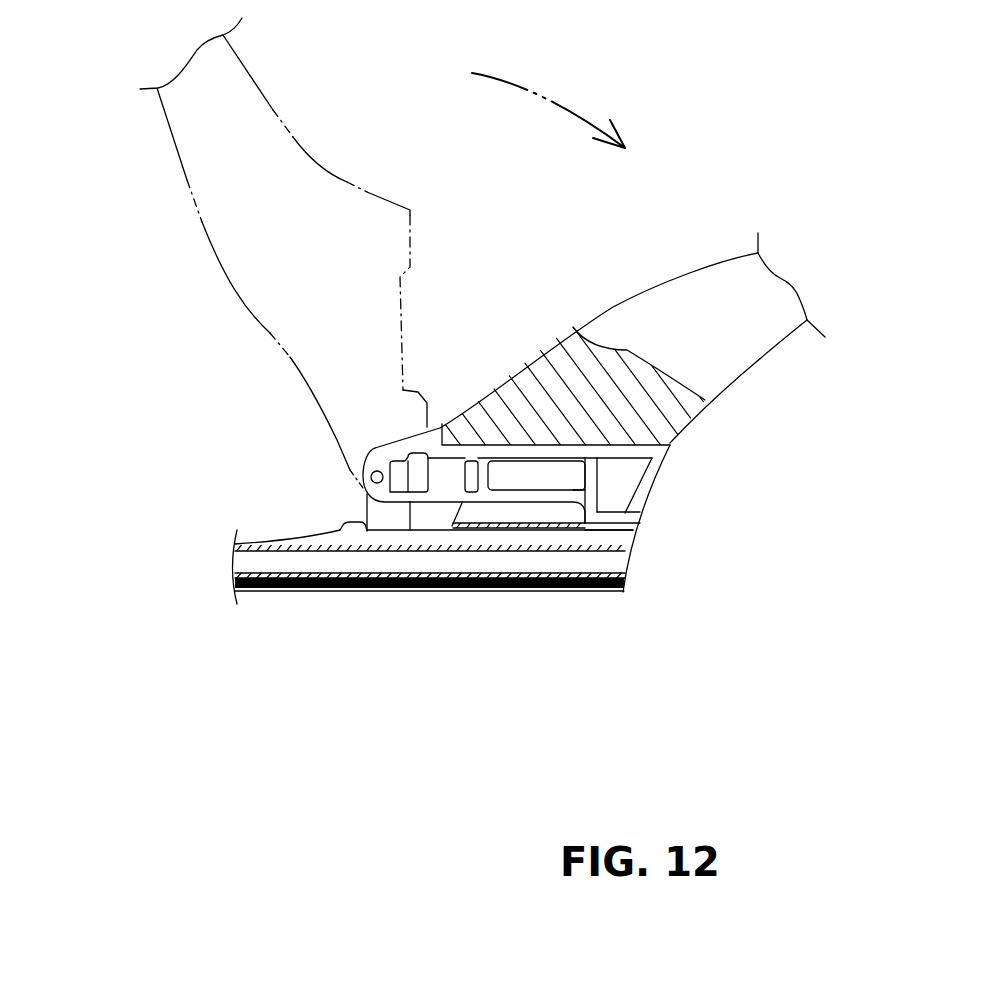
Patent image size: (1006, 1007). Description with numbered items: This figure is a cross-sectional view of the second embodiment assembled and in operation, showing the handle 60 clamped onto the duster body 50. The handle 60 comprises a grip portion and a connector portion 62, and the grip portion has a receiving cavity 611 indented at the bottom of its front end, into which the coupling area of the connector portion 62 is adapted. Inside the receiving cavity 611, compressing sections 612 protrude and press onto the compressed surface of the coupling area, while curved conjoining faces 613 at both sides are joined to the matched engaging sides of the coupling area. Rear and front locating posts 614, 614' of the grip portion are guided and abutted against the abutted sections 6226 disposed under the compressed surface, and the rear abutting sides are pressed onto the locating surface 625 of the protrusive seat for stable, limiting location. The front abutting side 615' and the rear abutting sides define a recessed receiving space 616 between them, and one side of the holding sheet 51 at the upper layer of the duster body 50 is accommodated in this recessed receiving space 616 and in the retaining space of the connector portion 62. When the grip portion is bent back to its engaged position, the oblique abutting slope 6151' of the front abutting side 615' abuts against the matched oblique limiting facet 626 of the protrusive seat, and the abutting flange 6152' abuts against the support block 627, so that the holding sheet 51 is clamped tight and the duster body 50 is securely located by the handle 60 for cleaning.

The duster body 50 is at (207, 547).
The holding sheet 51 is at (273, 543).
The handle 60 is at (913, 580).
The receiving cavity 611 is at (750, 372).
The compressing sections 612 is at (533, 443).
The curved conjoining faces 613 is at (650, 467).
The rear locating post 614 is at (523, 572).
The front locating post 614' is at (450, 395).
The front abutting side 615' is at (392, 615).
The oblique abutting slope 6151' is at (408, 654).
The abutting flange 6152' is at (326, 625).
The connector portion 62 is at (450, 600).
The locating surface 625 is at (628, 550).
The oblique limiting facet 626 is at (467, 528).
The support block 627 is at (347, 545).
The recessed receiving space 616 is at (500, 508).
The abutted sections 6226 is at (535, 495).